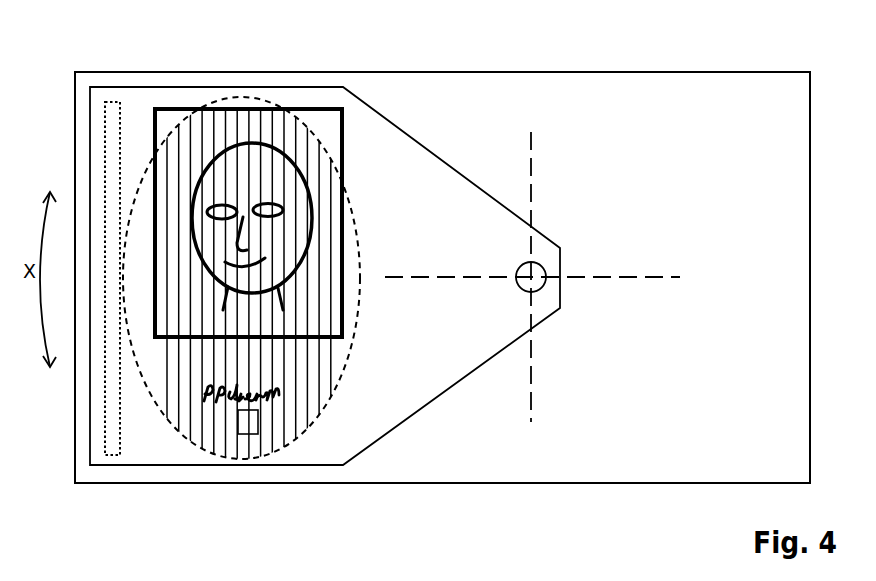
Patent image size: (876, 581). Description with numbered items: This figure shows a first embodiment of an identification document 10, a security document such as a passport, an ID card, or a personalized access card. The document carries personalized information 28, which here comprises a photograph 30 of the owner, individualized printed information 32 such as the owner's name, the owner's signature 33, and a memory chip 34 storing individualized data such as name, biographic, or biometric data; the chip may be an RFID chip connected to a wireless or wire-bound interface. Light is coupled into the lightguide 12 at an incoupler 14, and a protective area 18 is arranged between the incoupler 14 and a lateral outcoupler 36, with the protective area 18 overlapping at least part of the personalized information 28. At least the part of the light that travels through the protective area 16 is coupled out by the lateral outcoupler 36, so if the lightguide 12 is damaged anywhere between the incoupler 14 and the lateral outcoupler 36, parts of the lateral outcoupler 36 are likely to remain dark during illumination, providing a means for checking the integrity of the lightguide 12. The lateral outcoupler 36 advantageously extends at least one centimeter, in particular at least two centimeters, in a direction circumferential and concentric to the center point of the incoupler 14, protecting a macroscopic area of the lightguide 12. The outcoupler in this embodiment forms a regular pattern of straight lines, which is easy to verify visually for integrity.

The identification card 10 is at (442, 251).
The lightguide 12 is at (325, 248).
The incoupler 14 is at (532, 277).
The protective area 16 is at (248, 185).
The protective area 18 is at (233, 246).
The personalized information 28 is at (92, 473).
The photograph 30 is at (285, 238).
The individualized printed information 32 is at (281, 459).
The owner's signature 33 is at (263, 463).
The memory chip 34 is at (218, 476).
The lateral outcoupler 36 is at (105, 123).